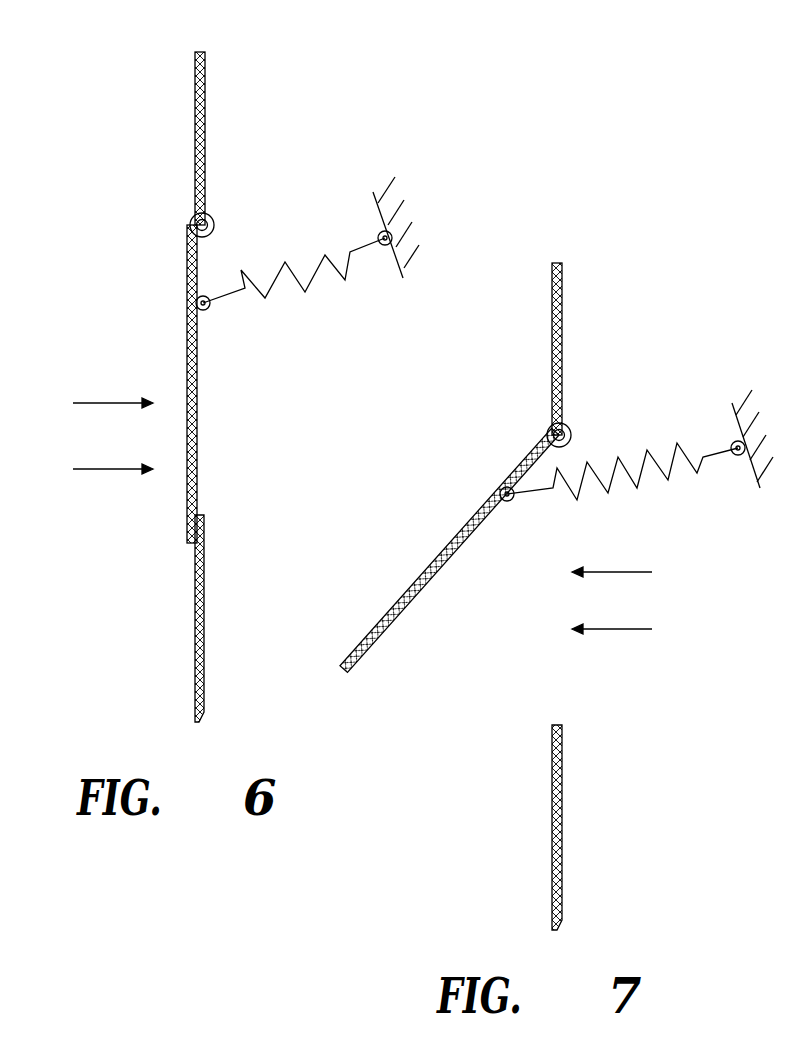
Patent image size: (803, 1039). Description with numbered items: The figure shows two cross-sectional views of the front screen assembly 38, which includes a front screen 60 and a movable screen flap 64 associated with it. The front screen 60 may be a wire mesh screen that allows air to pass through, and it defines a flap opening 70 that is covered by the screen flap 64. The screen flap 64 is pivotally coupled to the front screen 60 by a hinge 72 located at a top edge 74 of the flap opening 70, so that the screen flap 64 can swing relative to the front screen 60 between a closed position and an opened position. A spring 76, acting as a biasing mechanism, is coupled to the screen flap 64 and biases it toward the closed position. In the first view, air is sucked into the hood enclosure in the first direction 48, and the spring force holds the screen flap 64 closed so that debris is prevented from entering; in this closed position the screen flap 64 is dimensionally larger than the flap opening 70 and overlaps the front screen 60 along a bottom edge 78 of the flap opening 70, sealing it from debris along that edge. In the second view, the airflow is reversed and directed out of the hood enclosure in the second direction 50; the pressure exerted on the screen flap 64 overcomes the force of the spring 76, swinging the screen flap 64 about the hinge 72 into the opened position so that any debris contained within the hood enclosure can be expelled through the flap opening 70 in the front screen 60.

In FIG. 6, the front screen assembly 38 is at (228, 371).
In FIG. 7, the front screen assembly 38 is at (556, 581).
In FIG. 6, the first direction 48 is at (97, 403).
In FIG. 7, the second direction 50 is at (630, 572).
In FIG. 6, the front screen 60 is at (212, 117).
In FIG. 7, the front screen 60 is at (548, 332).
In FIG. 6, the screen flap 64 is at (148, 318).
In FIG. 7, the screen flap 64 is at (425, 537).
In FIG. 7, the second flap opening 70 is at (562, 685).
In FIG. 6, the hinge 72 is at (190, 222).
In FIG. 7, the hinge 72 is at (547, 433).
In FIG. 6, the top edge 74 is at (206, 200).
In FIG. 7, the top edge 74 is at (566, 405).
In FIG. 6, the spring 76 is at (310, 275).
In FIG. 7, the spring 76 is at (653, 453).
In FIG. 6, the bottom edge 78 is at (205, 530).